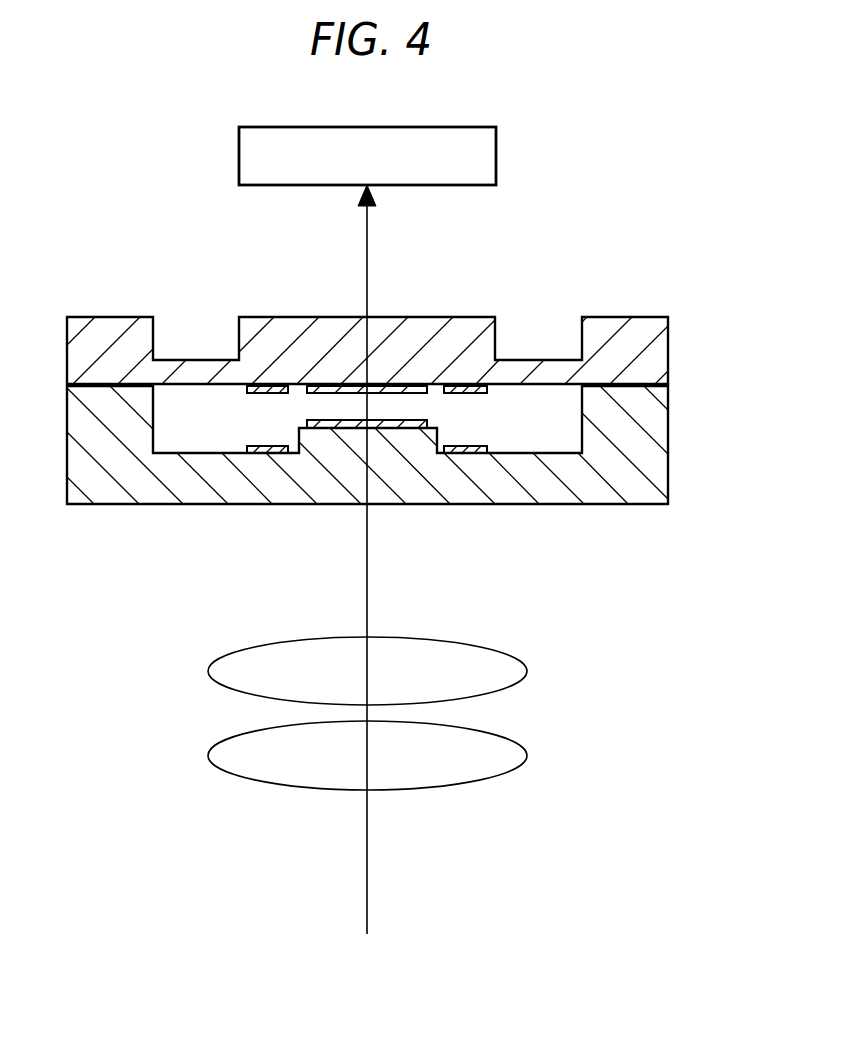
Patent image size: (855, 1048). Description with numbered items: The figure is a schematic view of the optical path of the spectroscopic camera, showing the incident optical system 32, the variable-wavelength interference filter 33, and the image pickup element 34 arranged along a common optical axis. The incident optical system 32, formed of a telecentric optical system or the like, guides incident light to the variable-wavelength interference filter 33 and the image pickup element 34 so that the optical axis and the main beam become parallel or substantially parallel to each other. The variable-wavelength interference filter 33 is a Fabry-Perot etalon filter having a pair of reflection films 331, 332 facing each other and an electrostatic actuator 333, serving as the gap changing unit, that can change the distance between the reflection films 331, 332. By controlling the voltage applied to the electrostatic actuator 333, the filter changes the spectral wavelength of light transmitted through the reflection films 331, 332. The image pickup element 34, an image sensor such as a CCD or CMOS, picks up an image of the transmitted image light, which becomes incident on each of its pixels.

The incident optical system 32 is at (558, 706).
The variable-wavelength interference filter 33 is at (668, 425).
The image pickup element 34 is at (496, 156).
The reflection film 331 is at (408, 387).
The reflection film 332 is at (416, 428).
The electrostatic actuator 333 is at (254, 388).